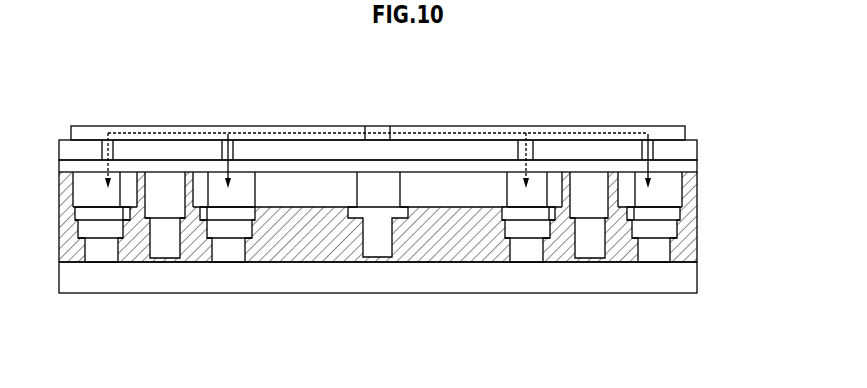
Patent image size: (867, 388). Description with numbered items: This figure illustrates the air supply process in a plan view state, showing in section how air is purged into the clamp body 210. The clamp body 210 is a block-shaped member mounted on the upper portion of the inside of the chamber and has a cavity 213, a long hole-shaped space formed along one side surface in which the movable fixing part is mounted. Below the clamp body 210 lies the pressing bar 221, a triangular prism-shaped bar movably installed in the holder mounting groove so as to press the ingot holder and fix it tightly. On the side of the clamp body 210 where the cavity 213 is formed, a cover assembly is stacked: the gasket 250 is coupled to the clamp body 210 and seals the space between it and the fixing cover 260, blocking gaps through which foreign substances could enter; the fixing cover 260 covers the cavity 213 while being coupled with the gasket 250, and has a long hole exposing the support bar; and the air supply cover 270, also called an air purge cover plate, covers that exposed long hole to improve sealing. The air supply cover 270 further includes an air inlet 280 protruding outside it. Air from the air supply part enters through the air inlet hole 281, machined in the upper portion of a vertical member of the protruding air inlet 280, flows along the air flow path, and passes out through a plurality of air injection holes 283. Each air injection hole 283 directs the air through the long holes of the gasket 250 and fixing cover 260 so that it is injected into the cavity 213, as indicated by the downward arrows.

The air injection hole 283 is at (100, 150).
The air inlet hole 281 is at (377, 124).
The air inlet 280 is at (665, 127).
The air supply cover 270 is at (690, 148).
The fixing cover 260 is at (697, 165).
The gasket 250 is at (697, 172).
The clamp body 210 is at (690, 225).
The pressing bar 221 is at (683, 275).
The cavity 213 is at (445, 190).